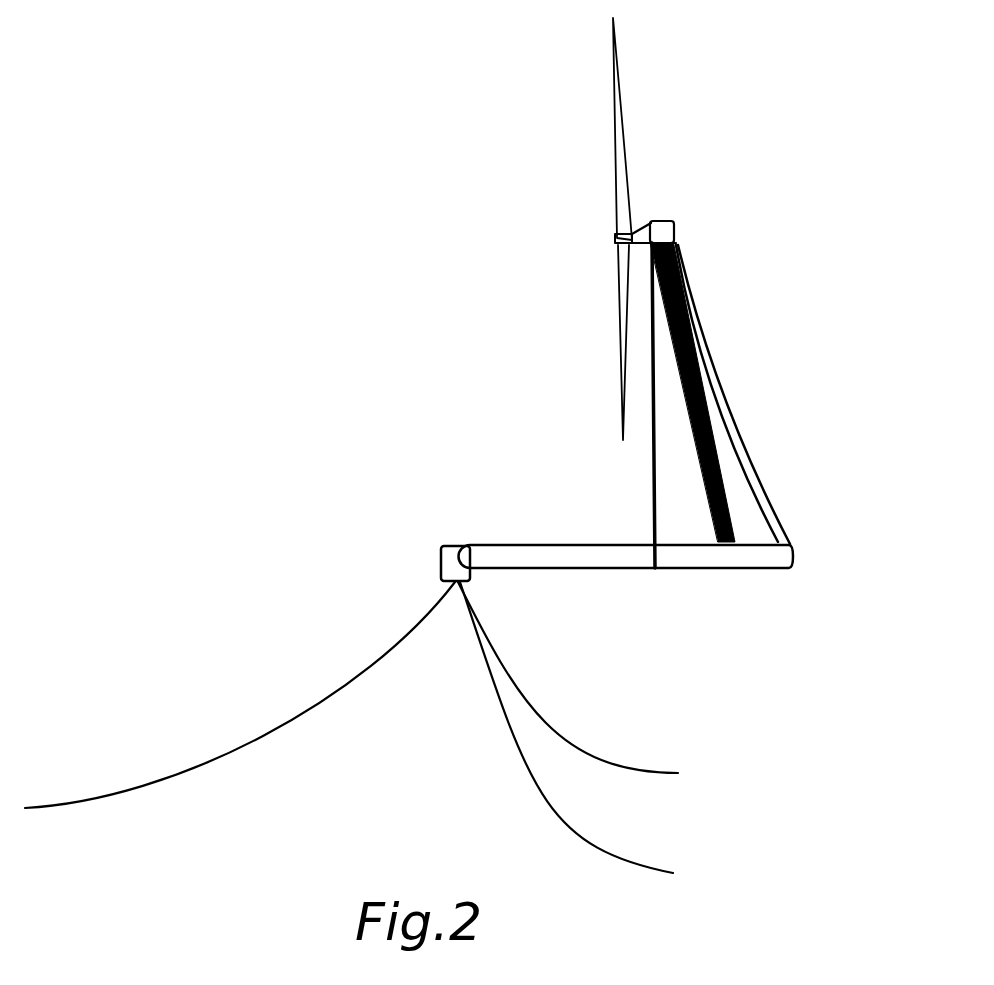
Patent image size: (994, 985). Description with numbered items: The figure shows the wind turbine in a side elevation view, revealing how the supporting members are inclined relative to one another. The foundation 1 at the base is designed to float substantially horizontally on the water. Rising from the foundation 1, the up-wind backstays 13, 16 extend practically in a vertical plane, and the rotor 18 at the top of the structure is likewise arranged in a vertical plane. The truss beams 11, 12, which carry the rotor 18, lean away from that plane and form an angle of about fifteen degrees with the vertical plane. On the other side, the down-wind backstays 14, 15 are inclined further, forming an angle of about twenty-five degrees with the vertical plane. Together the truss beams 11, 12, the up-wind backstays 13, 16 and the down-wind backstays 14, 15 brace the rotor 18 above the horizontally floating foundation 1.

The foundation 1 is at (603, 557).
The truss beam 11 is at (739, 392).
The truss beam 12 is at (693, 348).
The up-wind backstay 13 is at (604, 405).
The down-wind backstay 14 is at (745, 432).
The down-wind backstay 15 is at (780, 468).
The up-wind backstay 16 is at (650, 475).
The rotor 18 is at (616, 177).